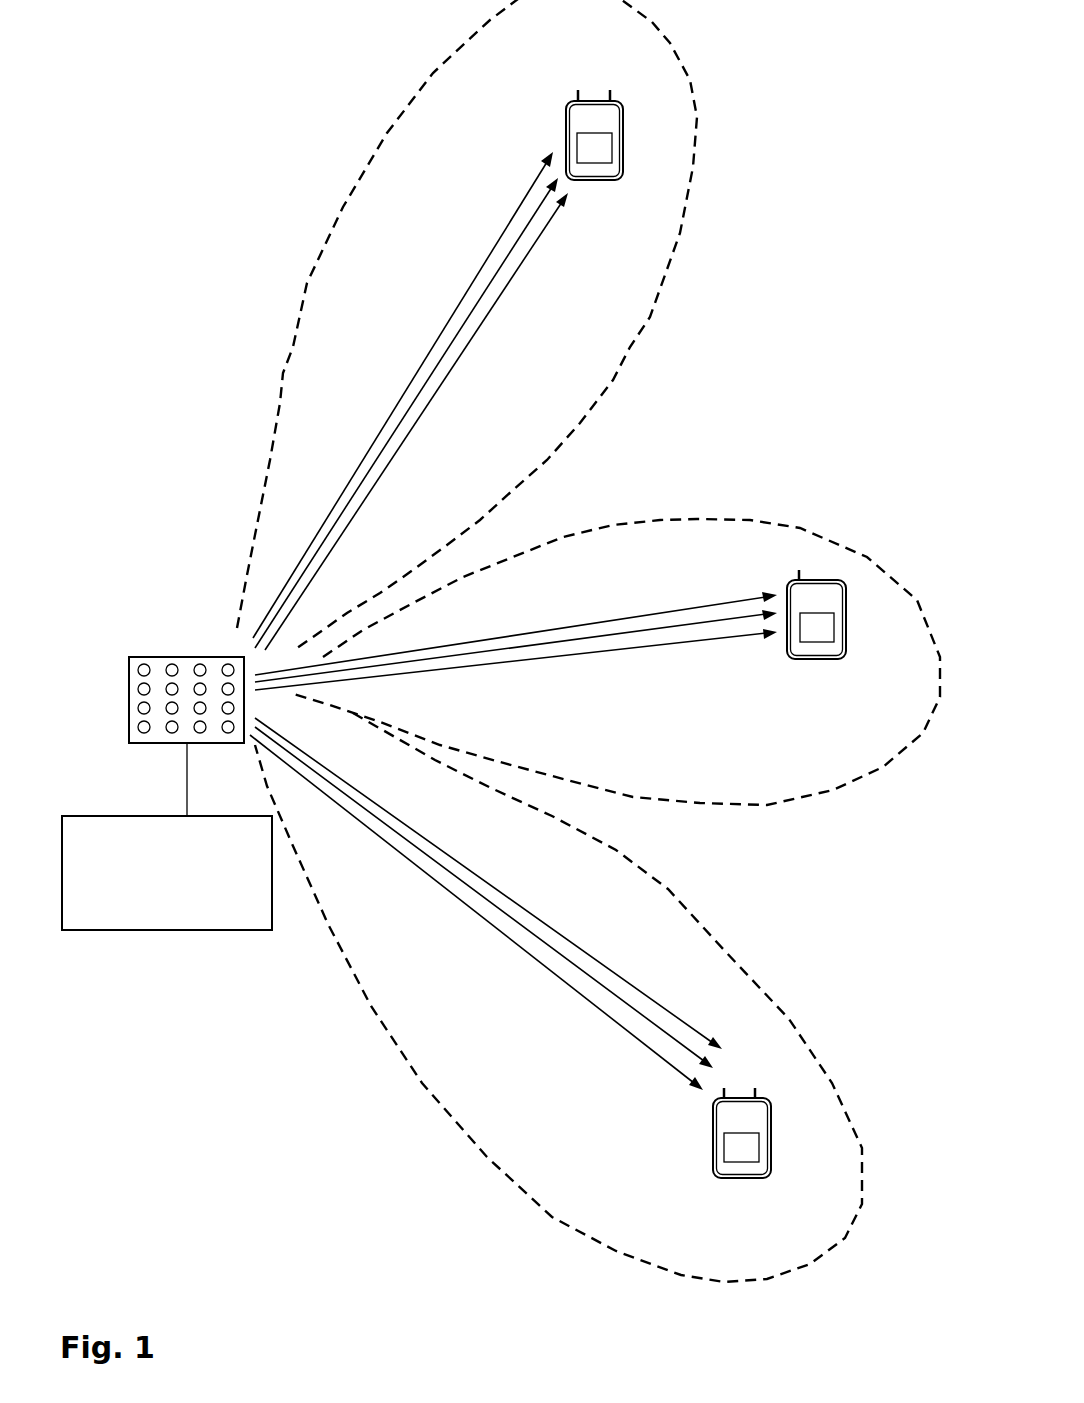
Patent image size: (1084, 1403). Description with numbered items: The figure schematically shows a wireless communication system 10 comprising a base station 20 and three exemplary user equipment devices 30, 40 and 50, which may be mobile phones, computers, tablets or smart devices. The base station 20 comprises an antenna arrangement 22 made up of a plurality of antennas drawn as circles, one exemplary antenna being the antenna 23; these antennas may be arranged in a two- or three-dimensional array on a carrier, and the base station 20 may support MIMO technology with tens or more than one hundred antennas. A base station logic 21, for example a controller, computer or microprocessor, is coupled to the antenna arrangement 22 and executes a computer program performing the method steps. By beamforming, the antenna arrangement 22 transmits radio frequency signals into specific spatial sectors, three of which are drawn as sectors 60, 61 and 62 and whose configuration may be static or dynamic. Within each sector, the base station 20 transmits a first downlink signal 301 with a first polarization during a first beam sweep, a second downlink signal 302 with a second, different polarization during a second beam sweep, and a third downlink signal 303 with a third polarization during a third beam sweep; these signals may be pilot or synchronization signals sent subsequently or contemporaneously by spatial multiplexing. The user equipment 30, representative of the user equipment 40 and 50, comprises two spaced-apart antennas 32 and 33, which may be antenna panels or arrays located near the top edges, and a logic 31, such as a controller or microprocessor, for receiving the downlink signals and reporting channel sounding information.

The wireless communication system 10 is at (851, 37).
The base station 20 is at (106, 641).
The base station logic 21 is at (193, 930).
The antenna arrangement 22 is at (117, 751).
The antenna 23 is at (198, 666).
The user equipment 30 is at (747, 1111).
The logic 31 is at (759, 1154).
The antenna 32 is at (726, 1088).
The antenna 33 is at (759, 1094).
The user equipment 40 is at (845, 620).
The user equipment 50 is at (623, 140).
The sector 60 is at (668, 889).
The sector 61 is at (697, 519).
The sector 62 is at (653, 22).
The first downlink signal 301 is at (502, 243).
The second downlink signal 302 is at (490, 287).
The third downlink signal 303 is at (480, 320).